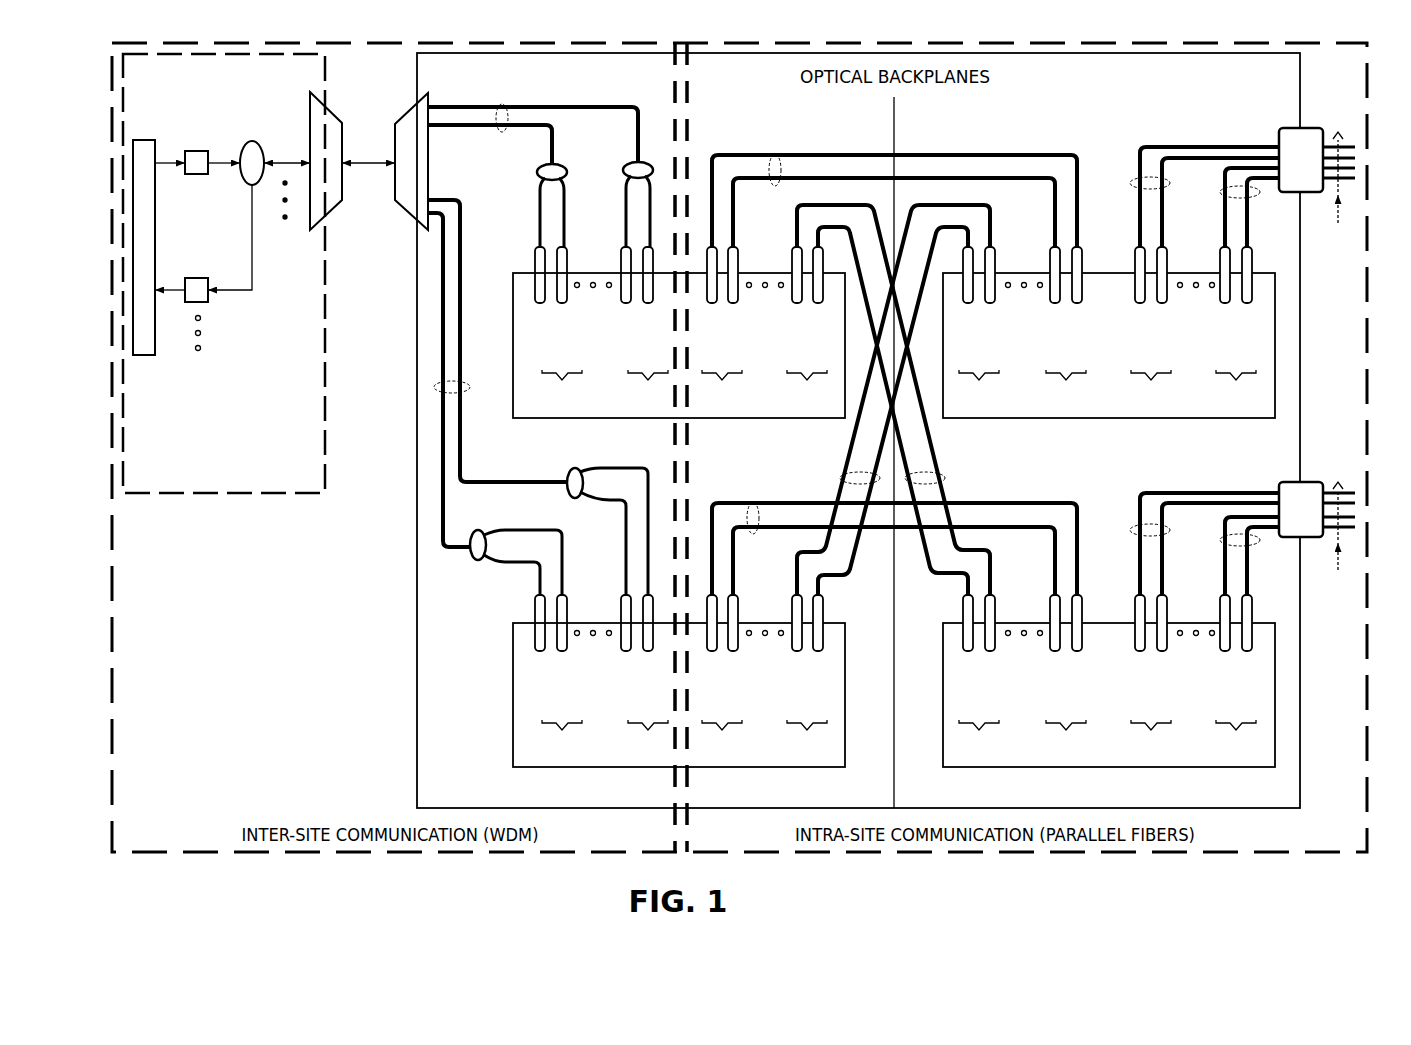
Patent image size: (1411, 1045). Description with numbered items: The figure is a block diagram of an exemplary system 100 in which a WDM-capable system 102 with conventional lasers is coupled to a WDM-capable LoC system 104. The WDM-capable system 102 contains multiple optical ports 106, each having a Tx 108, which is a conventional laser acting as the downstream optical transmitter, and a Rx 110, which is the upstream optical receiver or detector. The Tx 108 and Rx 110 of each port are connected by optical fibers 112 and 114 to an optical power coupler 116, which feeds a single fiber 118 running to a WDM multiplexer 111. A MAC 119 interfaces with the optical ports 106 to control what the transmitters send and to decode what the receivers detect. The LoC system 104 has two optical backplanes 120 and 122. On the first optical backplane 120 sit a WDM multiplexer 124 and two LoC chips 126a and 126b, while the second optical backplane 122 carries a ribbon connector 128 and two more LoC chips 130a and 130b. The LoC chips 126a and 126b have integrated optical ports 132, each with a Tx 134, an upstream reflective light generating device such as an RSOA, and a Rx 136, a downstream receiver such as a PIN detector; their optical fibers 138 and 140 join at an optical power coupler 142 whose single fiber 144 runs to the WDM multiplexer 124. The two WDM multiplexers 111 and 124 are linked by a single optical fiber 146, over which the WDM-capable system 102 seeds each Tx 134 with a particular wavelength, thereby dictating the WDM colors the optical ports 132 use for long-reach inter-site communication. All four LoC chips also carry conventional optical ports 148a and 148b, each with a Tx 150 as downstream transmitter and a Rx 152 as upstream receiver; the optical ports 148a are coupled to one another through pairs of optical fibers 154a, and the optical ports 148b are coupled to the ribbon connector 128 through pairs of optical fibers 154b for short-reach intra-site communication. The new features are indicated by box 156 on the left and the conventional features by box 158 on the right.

The system 100 is at (395, 883).
The WDM-capable system 102 is at (183, 497).
The WDM-capable LoC system 104 is at (413, 503).
The optical port 106 is at (226, 320).
The Tx 108 is at (196, 148).
The Rx 110 is at (196, 276).
The WDM multiplexer 111 is at (333, 113).
The optical fiber 112 is at (221, 172).
The optical fiber 114 is at (238, 292).
The optical power coupler 116 is at (246, 141).
The single fiber 118 is at (288, 156).
The MAC 119 is at (143, 358).
The first optical backplane 120 is at (844, 133).
The second optical backplane 122 is at (909, 133).
The WDM multiplexer 124 is at (404, 218).
The LoC chip 126a is at (548, 422).
The LoC chip 126b is at (648, 770).
The ribbon connector 128 is at (1316, 128).
The LoC chip 130a is at (1145, 425).
The LoC chip 130b is at (1138, 770).
The optical port 132 is at (605, 565).
The Tx 134 is at (532, 262).
The Rx 136 is at (566, 303).
The optical fiber 138 is at (540, 190).
The optical fiber 140 is at (560, 188).
The optical power coupler 142 is at (538, 166).
The single fiber 144 is at (505, 103).
The single optical fiber 146 is at (366, 158).
The optical port 148a is at (894, 565).
The optical port 148b is at (1193, 565).
The Tx 150 is at (792, 262).
The Rx 152 is at (740, 298).
The pairs of optical fibers 154a is at (778, 150).
The pairs of optical fibers 154b is at (1130, 183).
The box 156 is at (268, 858).
The box 158 is at (1245, 858).